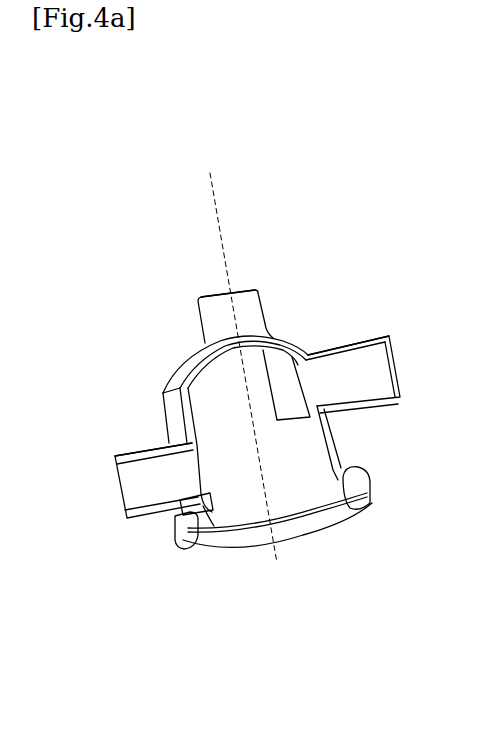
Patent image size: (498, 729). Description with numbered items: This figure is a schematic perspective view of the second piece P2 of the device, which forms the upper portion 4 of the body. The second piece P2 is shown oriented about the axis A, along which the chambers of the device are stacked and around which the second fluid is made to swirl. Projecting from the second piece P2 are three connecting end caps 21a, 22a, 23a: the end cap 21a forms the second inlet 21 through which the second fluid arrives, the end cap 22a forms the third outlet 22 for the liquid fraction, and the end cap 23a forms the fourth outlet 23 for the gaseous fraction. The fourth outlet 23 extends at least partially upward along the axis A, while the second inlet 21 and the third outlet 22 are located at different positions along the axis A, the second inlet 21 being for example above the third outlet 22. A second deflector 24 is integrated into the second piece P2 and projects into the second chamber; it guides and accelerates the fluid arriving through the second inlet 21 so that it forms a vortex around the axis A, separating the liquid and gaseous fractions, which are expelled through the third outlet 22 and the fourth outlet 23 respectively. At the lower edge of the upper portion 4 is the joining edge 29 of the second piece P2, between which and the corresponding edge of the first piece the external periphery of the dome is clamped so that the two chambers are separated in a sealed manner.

The axis A is at (213, 192).
The second piece P2 is at (146, 352).
The fourth outlet 23 is at (249, 296).
The connecting end cap 23a is at (215, 306).
The second deflector 24 is at (278, 368).
The second inlet 21 is at (362, 381).
The connecting end cap 21a is at (357, 343).
The third outlet 22 is at (138, 501).
The connecting end cap 22a is at (137, 478).
The joining edge 29 is at (180, 548).
The upper portion 4 is at (283, 493).